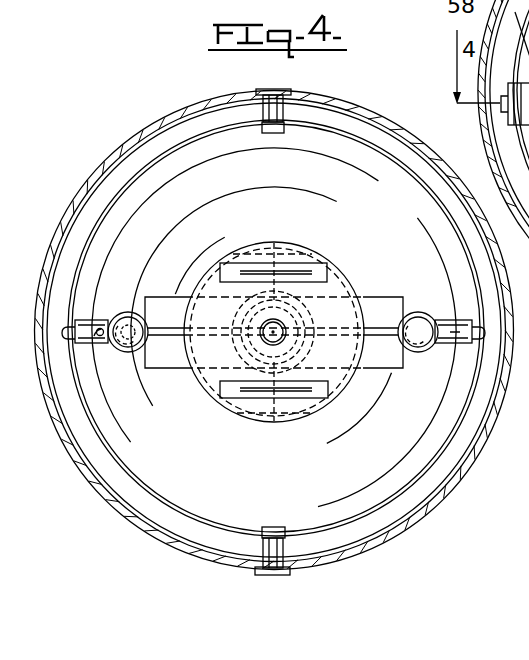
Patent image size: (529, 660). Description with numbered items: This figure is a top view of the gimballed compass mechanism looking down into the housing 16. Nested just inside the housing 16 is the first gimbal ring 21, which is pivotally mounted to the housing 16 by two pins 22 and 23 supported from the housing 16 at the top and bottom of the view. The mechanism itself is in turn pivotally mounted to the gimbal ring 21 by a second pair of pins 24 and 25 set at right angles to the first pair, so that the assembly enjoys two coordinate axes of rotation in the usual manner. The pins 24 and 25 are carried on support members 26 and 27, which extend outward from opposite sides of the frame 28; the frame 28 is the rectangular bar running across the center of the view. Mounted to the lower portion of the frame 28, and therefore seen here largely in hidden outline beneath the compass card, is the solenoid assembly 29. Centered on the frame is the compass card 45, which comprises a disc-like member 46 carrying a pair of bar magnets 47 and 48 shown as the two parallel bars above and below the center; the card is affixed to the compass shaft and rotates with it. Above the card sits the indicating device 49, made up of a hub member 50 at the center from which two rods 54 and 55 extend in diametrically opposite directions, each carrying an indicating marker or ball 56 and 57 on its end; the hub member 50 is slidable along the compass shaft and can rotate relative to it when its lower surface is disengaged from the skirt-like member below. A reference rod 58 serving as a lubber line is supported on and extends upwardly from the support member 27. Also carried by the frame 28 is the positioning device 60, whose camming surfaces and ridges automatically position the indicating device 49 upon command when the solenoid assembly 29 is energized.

The housing 16 is at (131, 146).
The first gimbal ring 21 is at (415, 190).
The pin 22 is at (281, 100).
The pin 23 is at (268, 552).
The pin 24 is at (483, 338).
The pin 25 is at (63, 410).
The support member 26 is at (447, 318).
The support member 27 is at (97, 319).
The frame 28 is at (385, 359).
The solenoid assembly 29 is at (287, 262).
The compass card 45 is at (356, 275).
The disc-like member 46 is at (208, 283).
The bar magnet 47 is at (234, 390).
The bar magnet 48 is at (263, 272).
The indicating device 49 is at (128, 356).
The hub member 50 is at (295, 344).
The rod 54 is at (178, 350).
The rod 55 is at (378, 328).
The indicating marker or ball 56 is at (138, 311).
The indicating marker or ball 57 is at (413, 348).
The reference rod 58 is at (63, 341).
The positioning device 60 is at (293, 374).